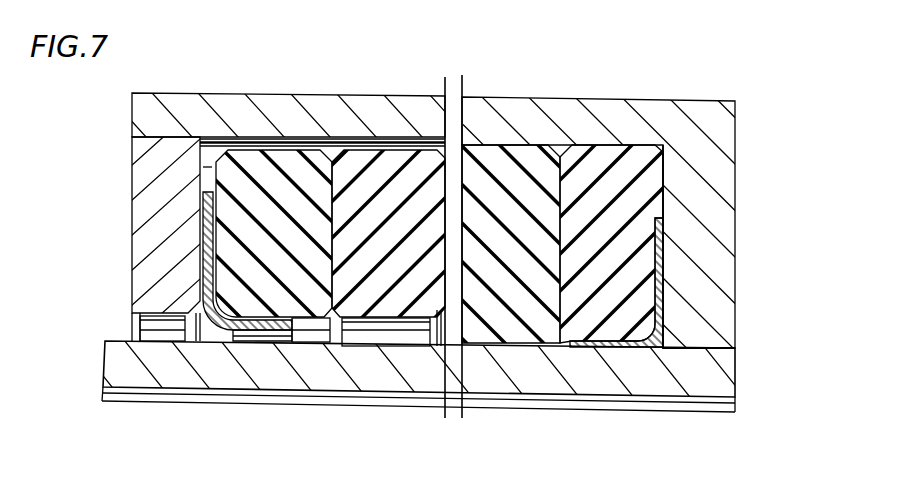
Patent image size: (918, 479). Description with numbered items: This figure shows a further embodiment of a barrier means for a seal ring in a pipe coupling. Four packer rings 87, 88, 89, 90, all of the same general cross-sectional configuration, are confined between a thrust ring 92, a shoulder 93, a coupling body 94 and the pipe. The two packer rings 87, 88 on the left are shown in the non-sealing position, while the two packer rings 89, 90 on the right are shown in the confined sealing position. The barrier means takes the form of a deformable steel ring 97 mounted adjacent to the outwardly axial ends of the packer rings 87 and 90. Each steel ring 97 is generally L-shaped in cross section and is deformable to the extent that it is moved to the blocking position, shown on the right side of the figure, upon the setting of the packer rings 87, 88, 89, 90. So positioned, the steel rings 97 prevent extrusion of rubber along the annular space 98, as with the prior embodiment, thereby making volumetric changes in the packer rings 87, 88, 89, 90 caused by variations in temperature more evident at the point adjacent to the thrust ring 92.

The packer ring 87 is at (276, 172).
The packer ring 88 is at (390, 165).
The packer ring 89 is at (520, 166).
The packer ring 90 is at (617, 160).
The thrust ring 92 is at (153, 212).
The shoulder 93 is at (667, 177).
The coupling body 94 is at (584, 120).
The deformable steel ring 97 is at (203, 258).
The annular space 98 is at (730, 348).